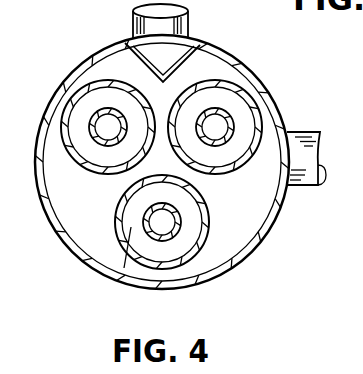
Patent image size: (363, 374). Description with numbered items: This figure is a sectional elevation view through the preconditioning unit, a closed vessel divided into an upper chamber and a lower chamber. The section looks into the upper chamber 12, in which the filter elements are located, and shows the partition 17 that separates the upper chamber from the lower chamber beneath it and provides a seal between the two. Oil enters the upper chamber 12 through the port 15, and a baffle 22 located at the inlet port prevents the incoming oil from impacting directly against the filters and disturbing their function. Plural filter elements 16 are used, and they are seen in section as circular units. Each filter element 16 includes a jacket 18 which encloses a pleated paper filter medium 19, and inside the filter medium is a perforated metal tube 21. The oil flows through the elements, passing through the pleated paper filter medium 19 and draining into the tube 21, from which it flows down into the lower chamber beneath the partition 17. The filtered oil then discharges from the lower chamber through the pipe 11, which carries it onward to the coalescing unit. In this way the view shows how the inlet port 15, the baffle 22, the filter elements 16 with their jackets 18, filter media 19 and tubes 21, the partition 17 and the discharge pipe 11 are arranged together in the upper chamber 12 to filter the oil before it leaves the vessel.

The pipe 11 is at (319, 168).
The upper chamber 12 is at (72, 212).
The port 15 is at (189, 27).
The filter element 16 is at (231, 81).
The partition 17 is at (247, 222).
The jacket 18 is at (244, 258).
The pleated paper filter medium 19 is at (125, 258).
The perforated metal tube 21 is at (177, 232).
The baffle 22 is at (89, 67).